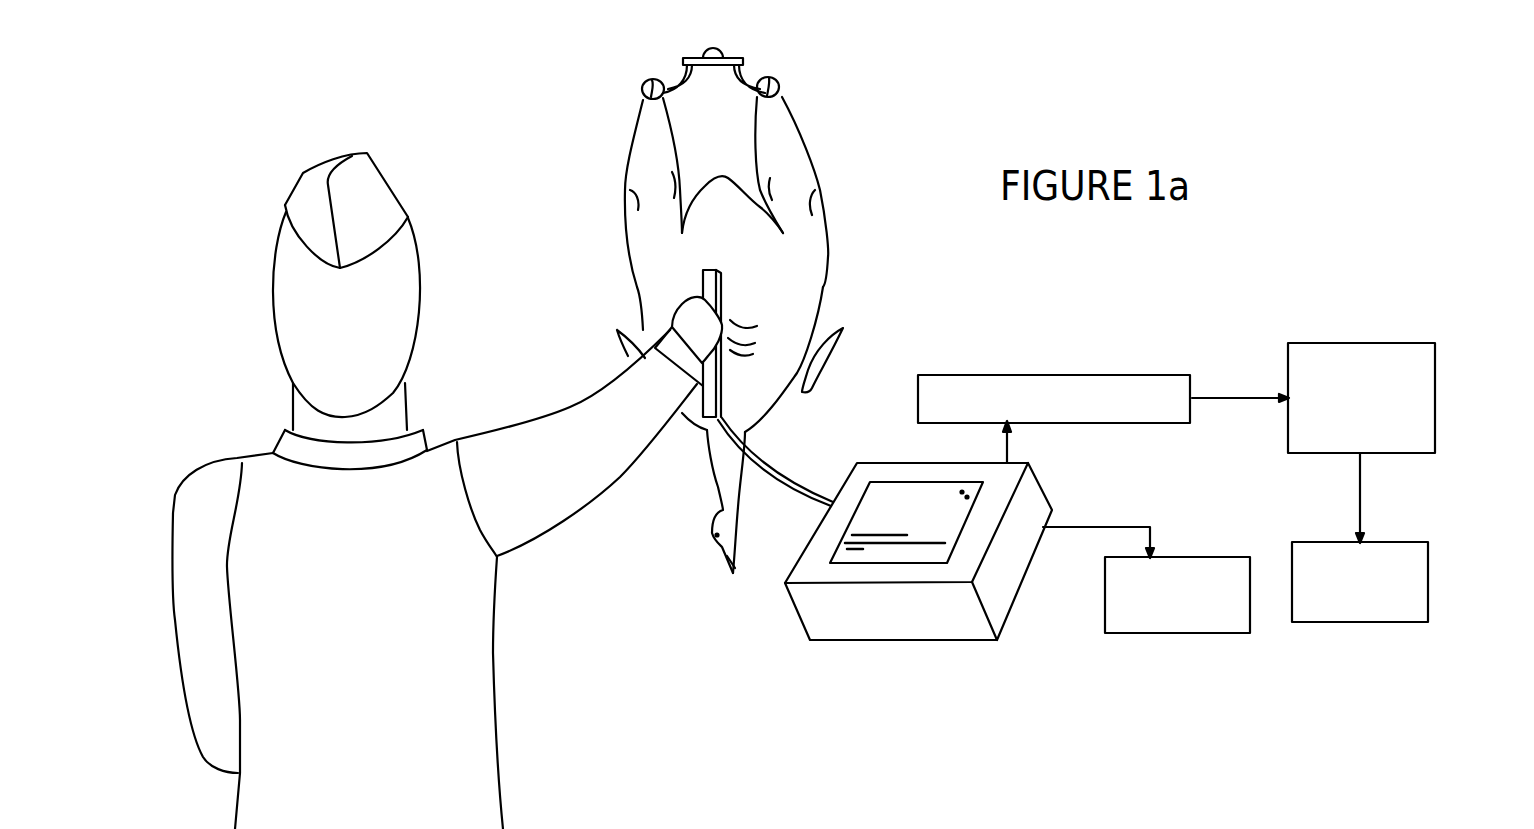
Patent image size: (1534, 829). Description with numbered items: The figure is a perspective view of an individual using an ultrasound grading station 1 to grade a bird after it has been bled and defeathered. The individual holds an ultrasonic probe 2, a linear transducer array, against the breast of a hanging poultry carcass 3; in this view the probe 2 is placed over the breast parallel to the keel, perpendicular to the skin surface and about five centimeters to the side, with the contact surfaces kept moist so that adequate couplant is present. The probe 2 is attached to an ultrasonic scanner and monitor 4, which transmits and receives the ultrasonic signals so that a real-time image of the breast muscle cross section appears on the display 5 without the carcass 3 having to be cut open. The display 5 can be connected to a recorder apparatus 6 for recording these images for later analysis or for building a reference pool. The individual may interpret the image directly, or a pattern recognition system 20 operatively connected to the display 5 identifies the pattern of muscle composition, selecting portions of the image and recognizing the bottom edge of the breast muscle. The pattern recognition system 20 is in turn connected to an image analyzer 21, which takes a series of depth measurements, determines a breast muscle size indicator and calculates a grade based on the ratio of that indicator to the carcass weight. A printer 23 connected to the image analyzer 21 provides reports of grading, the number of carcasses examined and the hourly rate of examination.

The ultrasound grading station 1 is at (482, 680).
The ultrasonic probe 2 is at (703, 290).
The poultry carcass 3 is at (827, 283).
The ultrasonic scanner and monitor 4 is at (815, 630).
The display 5 is at (887, 492).
The recorder apparatus 6 is at (1135, 618).
The pattern recognition system 20 is at (1080, 378).
The image analyzer 21 is at (1317, 354).
The printer 23 is at (1307, 610).